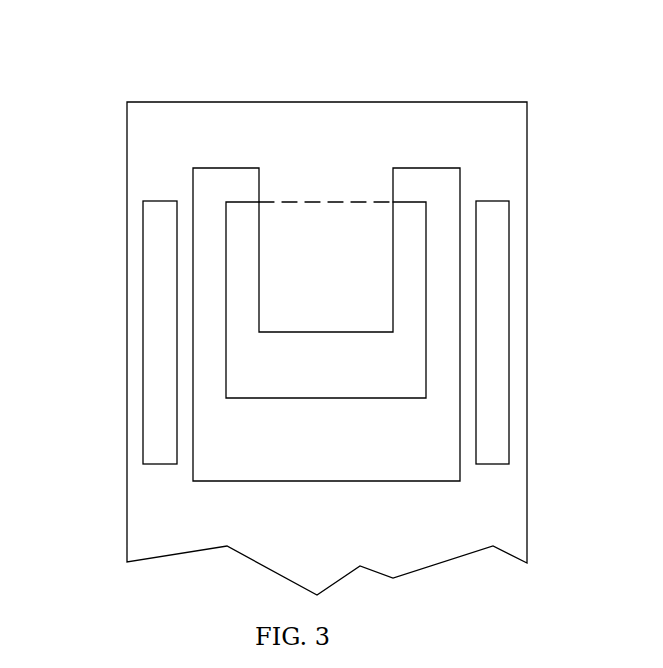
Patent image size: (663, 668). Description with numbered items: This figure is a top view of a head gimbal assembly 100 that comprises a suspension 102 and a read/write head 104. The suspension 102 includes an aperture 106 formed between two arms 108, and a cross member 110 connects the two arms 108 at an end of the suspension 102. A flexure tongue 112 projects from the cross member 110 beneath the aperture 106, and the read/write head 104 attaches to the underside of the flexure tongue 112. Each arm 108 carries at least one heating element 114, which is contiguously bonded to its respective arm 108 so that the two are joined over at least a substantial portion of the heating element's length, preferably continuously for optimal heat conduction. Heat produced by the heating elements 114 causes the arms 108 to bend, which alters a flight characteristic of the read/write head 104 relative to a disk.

The head gimbal assembly 100 is at (326, 304).
The suspension 102 is at (127, 102).
The read/write head 104 is at (337, 240).
The aperture 106 is at (409, 456).
The arms 108 is at (326, 332).
The cross member 110 is at (329, 119).
The flexure tongue 112 is at (325, 233).
The heating element 114 is at (162, 426).